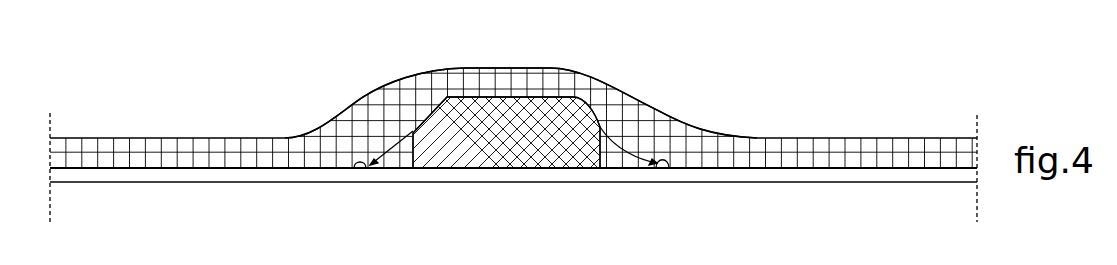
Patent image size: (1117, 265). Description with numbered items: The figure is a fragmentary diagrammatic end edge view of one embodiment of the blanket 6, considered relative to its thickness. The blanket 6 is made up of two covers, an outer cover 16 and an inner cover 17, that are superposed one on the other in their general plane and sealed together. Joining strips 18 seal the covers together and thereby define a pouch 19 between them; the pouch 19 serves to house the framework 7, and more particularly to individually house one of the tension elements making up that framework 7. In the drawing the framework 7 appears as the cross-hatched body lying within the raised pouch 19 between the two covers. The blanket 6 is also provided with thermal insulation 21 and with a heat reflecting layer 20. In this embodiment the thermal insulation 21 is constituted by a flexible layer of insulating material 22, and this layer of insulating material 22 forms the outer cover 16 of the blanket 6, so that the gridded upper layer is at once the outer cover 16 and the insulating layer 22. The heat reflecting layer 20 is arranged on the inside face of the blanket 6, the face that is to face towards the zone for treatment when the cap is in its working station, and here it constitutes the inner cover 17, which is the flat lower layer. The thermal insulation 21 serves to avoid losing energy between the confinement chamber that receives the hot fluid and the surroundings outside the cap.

The blanket 6 is at (950, 98).
The framework 7 is at (413, 166).
The outer cover 16 is at (513, 115).
The layer of insulating material 22 is at (155, 138).
The inner cover 17 is at (513, 206).
The heat reflecting layer 20 is at (145, 183).
The joining strips 18 is at (359, 164).
The pouch 19 is at (395, 152).
The thermal insulation 21 is at (690, 115).